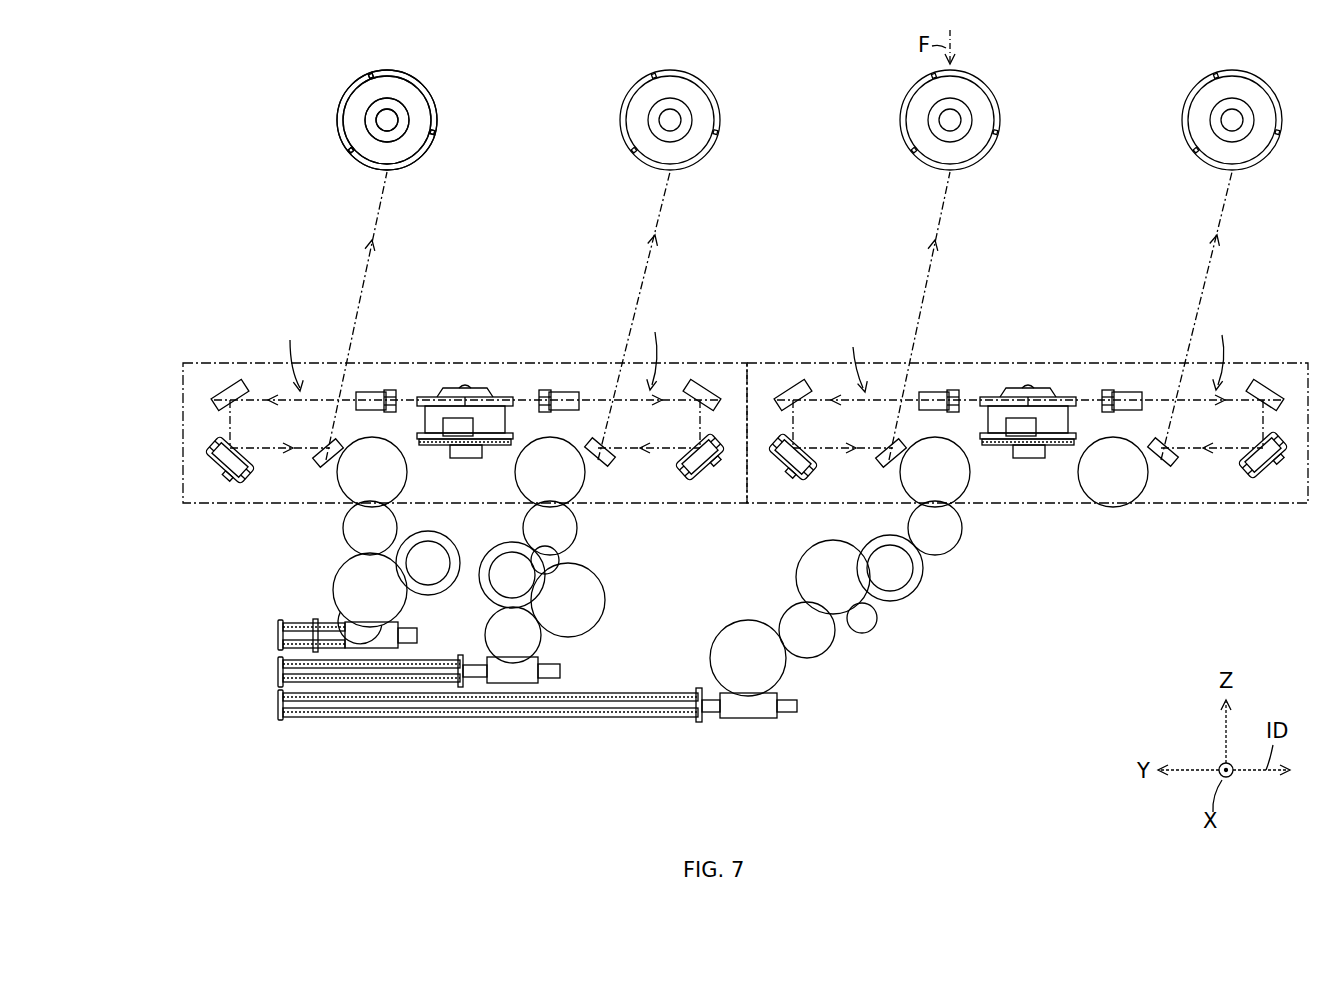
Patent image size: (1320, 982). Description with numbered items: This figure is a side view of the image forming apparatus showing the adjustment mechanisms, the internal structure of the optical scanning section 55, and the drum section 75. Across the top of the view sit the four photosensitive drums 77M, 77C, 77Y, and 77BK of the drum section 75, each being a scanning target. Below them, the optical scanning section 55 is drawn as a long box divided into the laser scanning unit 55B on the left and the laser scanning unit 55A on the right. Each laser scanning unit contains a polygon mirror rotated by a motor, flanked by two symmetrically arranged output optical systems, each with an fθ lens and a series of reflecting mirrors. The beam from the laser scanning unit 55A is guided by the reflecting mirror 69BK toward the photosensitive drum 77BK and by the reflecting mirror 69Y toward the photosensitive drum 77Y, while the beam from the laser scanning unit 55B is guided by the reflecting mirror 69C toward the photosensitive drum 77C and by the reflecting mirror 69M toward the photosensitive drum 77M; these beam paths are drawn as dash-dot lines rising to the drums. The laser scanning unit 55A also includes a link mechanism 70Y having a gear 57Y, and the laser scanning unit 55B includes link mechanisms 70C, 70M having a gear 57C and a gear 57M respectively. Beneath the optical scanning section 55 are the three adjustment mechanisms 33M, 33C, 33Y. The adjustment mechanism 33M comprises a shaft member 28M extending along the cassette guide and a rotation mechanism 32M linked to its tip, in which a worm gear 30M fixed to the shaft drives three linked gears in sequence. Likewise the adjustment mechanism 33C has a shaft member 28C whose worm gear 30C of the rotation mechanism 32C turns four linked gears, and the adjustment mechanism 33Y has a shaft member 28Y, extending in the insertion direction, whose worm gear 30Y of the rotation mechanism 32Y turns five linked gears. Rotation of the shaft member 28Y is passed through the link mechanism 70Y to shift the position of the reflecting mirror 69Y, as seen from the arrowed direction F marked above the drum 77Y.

The drum section 75 is at (330, 120).
The photosensitive drum 77M is at (440, 140).
The photosensitive drum 77C is at (620, 118).
The photosensitive drum 77Y is at (900, 118).
The photosensitive drum 77BK is at (1182, 118).
The optical scanning section 55 is at (745, 371).
The laser scanning unit 55A is at (783, 362).
The laser scanning unit 55B is at (712, 362).
The reflecting mirror 69M is at (312, 466).
The reflecting mirror 69C is at (608, 464).
The reflecting mirror 69Y is at (880, 466).
The reflecting mirror 69BK is at (1170, 468).
The gear 57M is at (429, 472).
The link mechanism 70M is at (395, 478).
The gear 57C is at (621, 492).
The link mechanism 70C is at (572, 486).
The gear 57Y is at (987, 472).
The link mechanism 70Y is at (960, 478).
The shaft member 28M is at (298, 641).
The worm gear 30M is at (337, 608).
The rotation mechanism 32M is at (320, 572).
The adjustment mechanism 33M is at (291, 584).
The shaft member 28C is at (566, 792).
The worm gear 30C is at (492, 680).
The rotation mechanism 32C is at (543, 648).
The adjustment mechanism 33C is at (462, 665).
The shaft member 28Y is at (800, 706).
The worm gear 30Y is at (770, 667).
The rotation mechanism 32Y is at (896, 598).
The adjustment mechanism 33Y is at (721, 611).